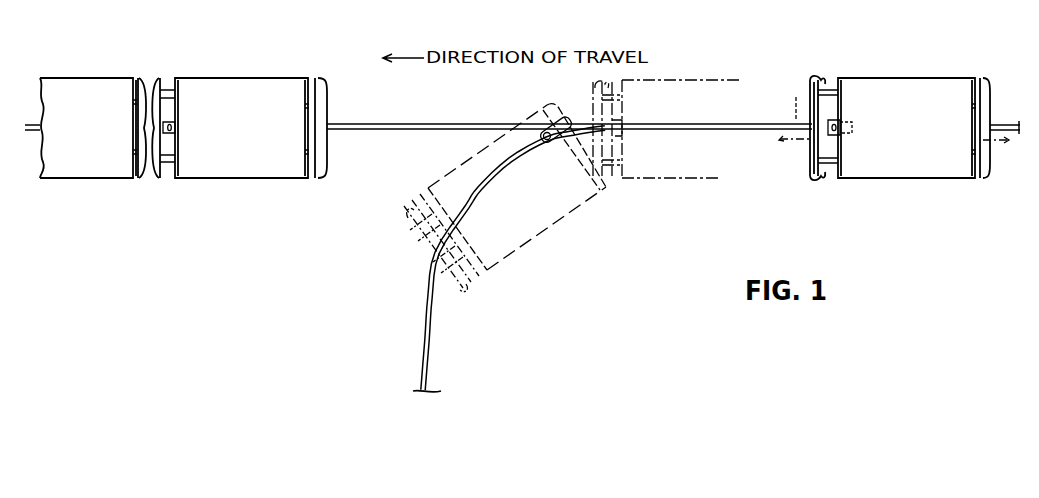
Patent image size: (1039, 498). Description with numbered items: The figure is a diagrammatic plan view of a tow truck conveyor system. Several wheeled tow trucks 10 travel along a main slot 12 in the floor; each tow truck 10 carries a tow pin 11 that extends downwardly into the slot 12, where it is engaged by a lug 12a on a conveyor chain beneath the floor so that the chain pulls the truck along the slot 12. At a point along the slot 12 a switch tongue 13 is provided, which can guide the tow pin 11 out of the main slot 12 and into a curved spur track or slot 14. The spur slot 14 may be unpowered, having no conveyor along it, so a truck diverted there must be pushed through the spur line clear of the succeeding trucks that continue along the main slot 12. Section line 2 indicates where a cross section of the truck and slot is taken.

The wheeled tow truck 10 is at (877, 76).
The tow pin 11 is at (841, 123).
The slot 12 is at (432, 124).
The lug 12a is at (848, 137).
The switch tongue 13 is at (551, 132).
The spur track or slot 14 is at (481, 193).
The section line 2- 2 is at (893, 132).